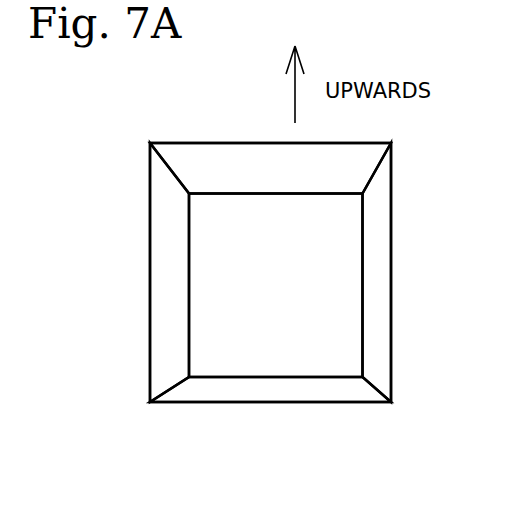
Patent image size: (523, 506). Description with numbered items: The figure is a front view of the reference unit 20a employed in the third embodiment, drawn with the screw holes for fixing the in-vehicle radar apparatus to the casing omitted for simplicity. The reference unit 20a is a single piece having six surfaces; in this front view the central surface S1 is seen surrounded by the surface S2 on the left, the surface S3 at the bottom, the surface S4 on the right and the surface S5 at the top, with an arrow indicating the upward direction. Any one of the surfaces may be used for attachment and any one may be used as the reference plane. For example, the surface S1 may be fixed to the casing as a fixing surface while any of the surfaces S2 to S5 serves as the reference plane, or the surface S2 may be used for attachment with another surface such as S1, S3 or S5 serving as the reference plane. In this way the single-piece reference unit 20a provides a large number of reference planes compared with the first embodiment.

The reference unit 20a is at (348, 403).
The surface S1 is at (225, 323).
The surface S2 is at (172, 273).
The surface S3 is at (223, 387).
The surface S4 is at (383, 330).
The surface S5 is at (200, 143).